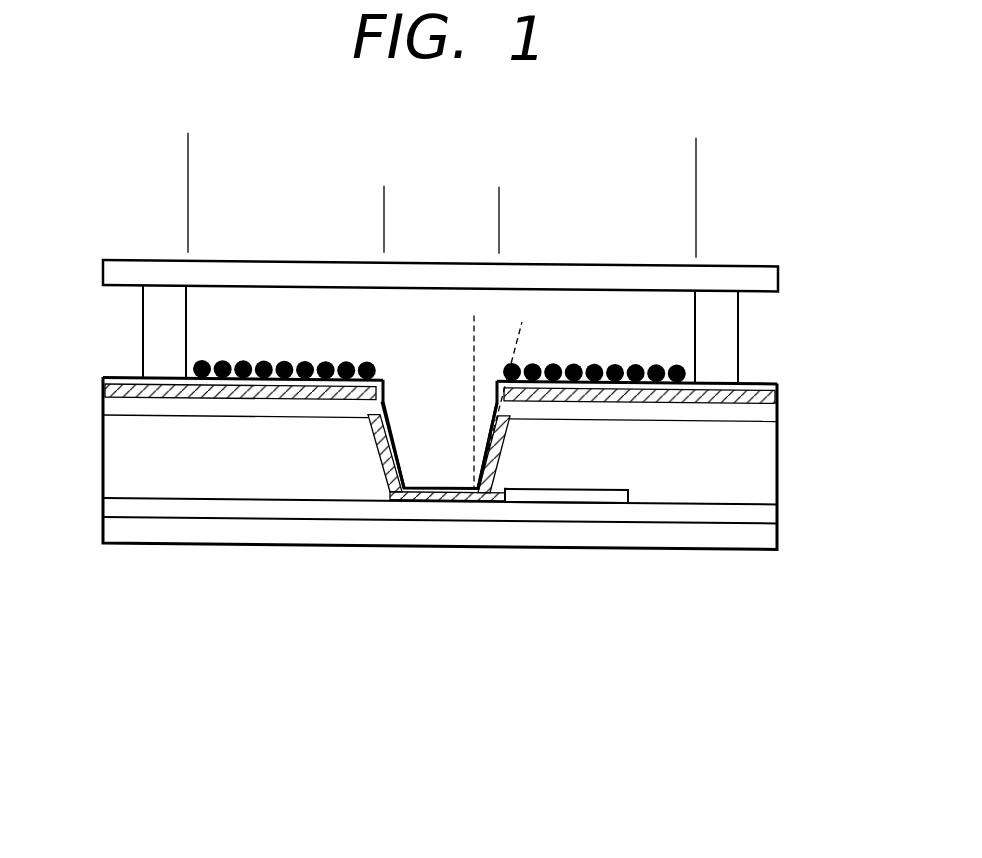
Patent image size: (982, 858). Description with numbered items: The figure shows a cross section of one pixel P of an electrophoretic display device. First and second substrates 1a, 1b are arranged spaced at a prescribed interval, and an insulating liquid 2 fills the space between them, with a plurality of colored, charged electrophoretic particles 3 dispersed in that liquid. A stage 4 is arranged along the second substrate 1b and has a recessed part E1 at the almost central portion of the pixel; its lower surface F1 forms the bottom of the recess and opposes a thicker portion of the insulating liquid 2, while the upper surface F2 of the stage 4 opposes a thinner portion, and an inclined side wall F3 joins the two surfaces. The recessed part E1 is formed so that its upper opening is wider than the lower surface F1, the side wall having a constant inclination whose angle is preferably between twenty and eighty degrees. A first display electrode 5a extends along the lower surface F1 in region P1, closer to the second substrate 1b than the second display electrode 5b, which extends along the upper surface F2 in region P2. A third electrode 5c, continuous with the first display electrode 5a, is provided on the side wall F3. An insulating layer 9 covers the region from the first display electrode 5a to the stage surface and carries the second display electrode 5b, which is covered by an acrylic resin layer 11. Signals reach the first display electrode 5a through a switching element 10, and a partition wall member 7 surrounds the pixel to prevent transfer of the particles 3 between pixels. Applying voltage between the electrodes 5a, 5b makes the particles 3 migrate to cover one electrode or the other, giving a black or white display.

The first substrate 1a is at (766, 273).
The second substrate 1b is at (760, 531).
The insulating liquid 2 is at (451, 331).
The charged electrophoretic particles 3 is at (578, 361).
The stage 4 is at (760, 463).
The first display electrode 5a is at (490, 492).
The second display electrode 5b is at (776, 390).
The third electrode 5c is at (383, 457).
The partition wall member 7 is at (722, 321).
The insulating layer 9 is at (762, 416).
The switching element 10 is at (590, 494).
The acrylic resin layer 11 is at (127, 377).
The recessed part E1 is at (456, 442).
The lower surface F1 is at (436, 492).
The upper surface F2 is at (397, 492).
The side wall F3 is at (490, 447).
The pixel P is at (696, 145).
The region in which first electrode is formed P1 is at (499, 196).
The region in which second electrode is formed P2 is at (384, 196).